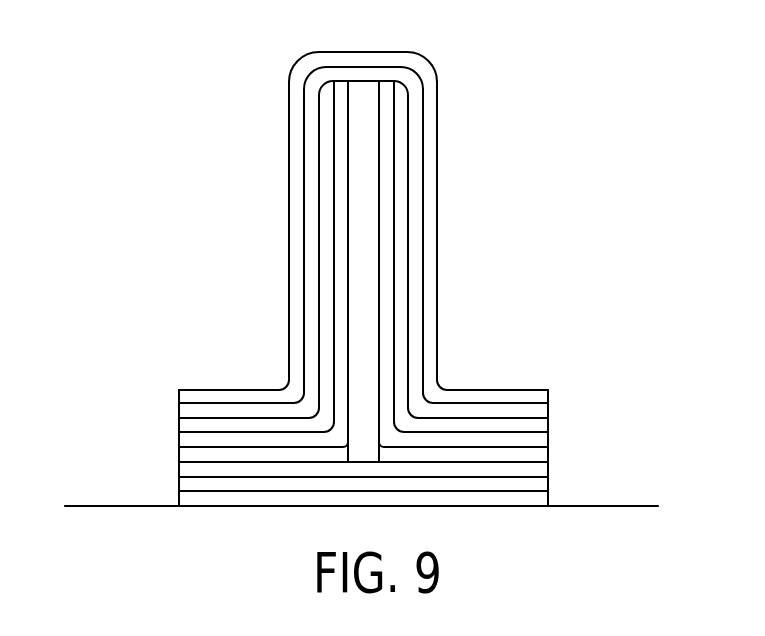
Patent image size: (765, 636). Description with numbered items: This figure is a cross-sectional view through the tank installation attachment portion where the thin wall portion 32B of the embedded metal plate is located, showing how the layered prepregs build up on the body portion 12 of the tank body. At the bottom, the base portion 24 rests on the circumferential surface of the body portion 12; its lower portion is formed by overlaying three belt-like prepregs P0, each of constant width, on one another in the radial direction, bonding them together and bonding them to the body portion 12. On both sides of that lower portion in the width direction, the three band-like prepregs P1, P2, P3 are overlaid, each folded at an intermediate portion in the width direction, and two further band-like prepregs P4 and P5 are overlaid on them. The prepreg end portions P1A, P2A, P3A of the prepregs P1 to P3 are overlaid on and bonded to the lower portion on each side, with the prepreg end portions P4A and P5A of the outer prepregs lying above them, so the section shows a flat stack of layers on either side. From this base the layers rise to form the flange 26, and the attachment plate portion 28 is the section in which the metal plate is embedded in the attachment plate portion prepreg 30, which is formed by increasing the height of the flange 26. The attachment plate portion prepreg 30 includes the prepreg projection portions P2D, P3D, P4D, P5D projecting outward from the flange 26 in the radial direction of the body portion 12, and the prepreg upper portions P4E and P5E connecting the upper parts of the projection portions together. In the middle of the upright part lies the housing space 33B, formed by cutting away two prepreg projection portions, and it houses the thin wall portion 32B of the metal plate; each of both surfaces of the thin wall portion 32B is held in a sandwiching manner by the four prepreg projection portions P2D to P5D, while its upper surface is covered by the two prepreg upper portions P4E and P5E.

The body portion 12 is at (77, 505).
The base portion 24 is at (242, 388).
The flange 26 is at (289, 298).
The attachment plate portion 28 is at (340, 52).
The attachment plate portion prepreg 30 is at (437, 118).
The thin wall portion 32B is at (387, 300).
The housing space 33B is at (372, 338).
The belt-like prepreg P0 is at (190, 497).
The band-like prepreg P1 is at (192, 453).
The band-like prepreg P2 is at (192, 440).
The band-like prepreg P3 is at (192, 425).
The band-like prepreg P4 is at (192, 408).
The band-like prepreg P5 is at (188, 395).
The prepreg end portion P1A is at (537, 455).
The prepreg end portion P2A is at (537, 440).
The prepreg end portion P3A is at (537, 424).
The prepreg end portion P4A is at (537, 410).
The prepreg end portion P5A is at (537, 396).
The prepreg projection portion P2D is at (341, 224).
The prepreg projection portion P3D is at (326, 205).
The prepreg projection portion P4D is at (314, 184).
The prepreg projection portion P5D is at (297, 159).
The prepreg upper portion P4E is at (363, 75).
The prepreg upper portion P5E is at (363, 62).